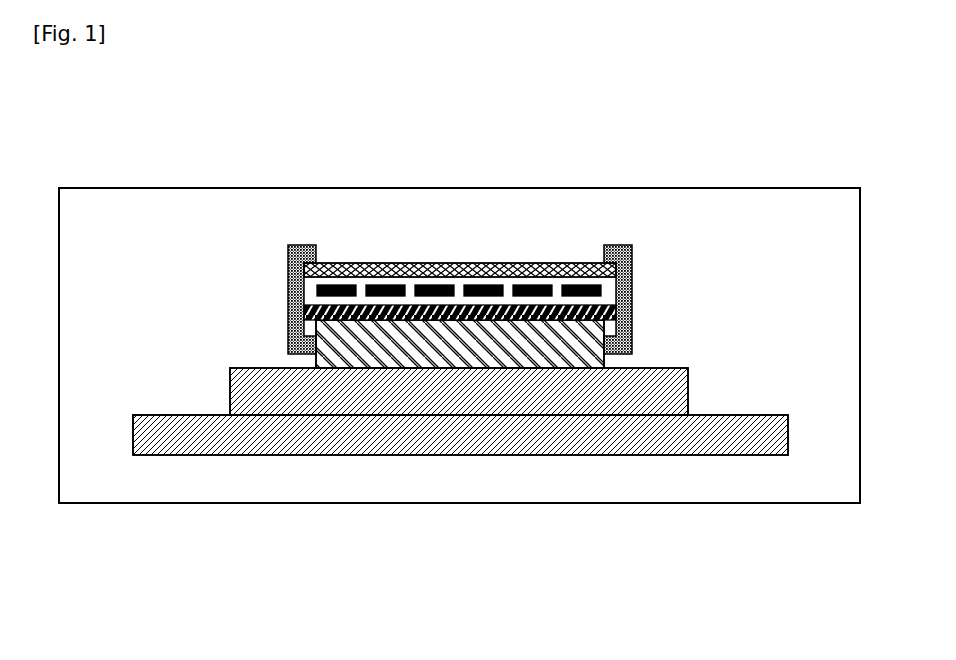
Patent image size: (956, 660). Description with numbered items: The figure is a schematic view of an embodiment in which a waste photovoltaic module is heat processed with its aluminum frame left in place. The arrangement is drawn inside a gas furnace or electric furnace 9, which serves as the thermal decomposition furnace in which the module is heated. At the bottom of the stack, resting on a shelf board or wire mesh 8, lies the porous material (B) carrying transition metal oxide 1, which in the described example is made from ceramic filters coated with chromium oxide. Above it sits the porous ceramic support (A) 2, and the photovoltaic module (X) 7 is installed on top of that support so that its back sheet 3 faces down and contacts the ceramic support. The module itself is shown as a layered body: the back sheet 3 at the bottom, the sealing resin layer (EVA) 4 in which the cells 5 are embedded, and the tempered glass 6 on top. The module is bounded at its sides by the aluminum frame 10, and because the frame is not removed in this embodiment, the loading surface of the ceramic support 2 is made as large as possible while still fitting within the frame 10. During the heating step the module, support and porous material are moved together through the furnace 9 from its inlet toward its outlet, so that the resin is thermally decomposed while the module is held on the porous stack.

The porous material (B) carrying transition metal oxide 1 is at (245, 395).
The porous ceramic support (A) 2 is at (587, 346).
The back sheet 3 is at (632, 313).
The sealing resin layer (EVA) 4 is at (605, 295).
The cell 5 is at (343, 291).
The tempered glass 6 is at (628, 243).
The photovoltaic module (X) 7 is at (240, 262).
The shelf board or wire mesh 8 is at (703, 457).
The gas furnace or electric furnace 9 is at (458, 503).
The aluminum frame 10 is at (290, 252).